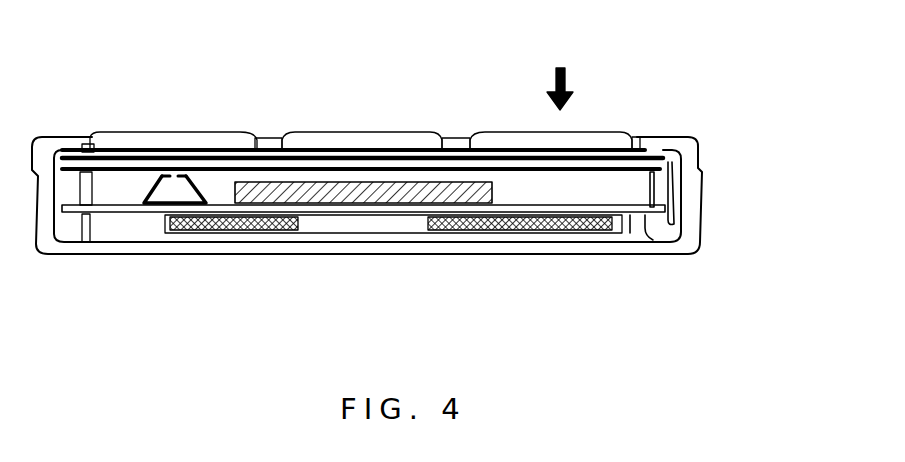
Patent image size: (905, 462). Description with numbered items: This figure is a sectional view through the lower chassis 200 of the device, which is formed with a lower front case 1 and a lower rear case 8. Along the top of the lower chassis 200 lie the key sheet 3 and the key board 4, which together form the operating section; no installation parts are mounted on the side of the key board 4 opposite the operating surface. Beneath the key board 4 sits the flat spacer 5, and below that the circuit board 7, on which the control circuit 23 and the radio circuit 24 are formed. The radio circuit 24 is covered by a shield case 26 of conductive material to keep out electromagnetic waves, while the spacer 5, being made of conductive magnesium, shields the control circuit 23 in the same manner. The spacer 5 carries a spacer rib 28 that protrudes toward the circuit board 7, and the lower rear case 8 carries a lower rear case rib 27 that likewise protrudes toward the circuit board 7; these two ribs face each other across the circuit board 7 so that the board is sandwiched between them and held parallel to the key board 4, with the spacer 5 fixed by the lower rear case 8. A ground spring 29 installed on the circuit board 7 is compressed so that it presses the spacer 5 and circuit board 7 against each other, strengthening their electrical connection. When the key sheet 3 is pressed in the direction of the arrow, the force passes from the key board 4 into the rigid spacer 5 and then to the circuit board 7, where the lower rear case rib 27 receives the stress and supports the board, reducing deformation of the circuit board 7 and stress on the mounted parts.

The lower chassis 200 is at (137, 134).
The lower front case 1 is at (690, 147).
The key sheet 3 is at (498, 142).
The key board 4 is at (643, 151).
The flat spacer 5 is at (668, 168).
The circuit board 7 is at (630, 212).
The lower rear case 8 is at (450, 243).
The control circuit 23 is at (315, 195).
The radio circuit 24 is at (222, 219).
The shield case 26 is at (175, 215).
The lower rear case rib 27 is at (650, 225).
The spacer rib 28 is at (647, 175).
The ground spring 29 is at (198, 172).